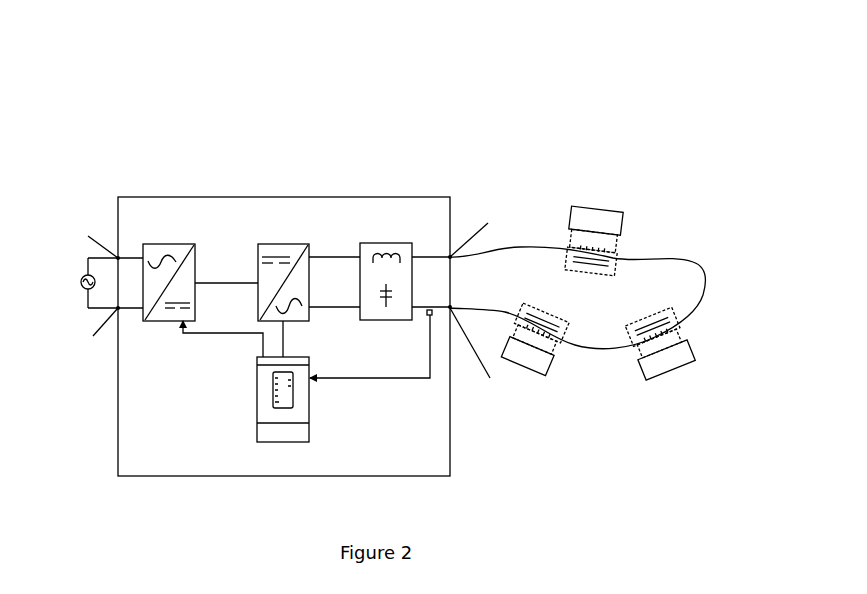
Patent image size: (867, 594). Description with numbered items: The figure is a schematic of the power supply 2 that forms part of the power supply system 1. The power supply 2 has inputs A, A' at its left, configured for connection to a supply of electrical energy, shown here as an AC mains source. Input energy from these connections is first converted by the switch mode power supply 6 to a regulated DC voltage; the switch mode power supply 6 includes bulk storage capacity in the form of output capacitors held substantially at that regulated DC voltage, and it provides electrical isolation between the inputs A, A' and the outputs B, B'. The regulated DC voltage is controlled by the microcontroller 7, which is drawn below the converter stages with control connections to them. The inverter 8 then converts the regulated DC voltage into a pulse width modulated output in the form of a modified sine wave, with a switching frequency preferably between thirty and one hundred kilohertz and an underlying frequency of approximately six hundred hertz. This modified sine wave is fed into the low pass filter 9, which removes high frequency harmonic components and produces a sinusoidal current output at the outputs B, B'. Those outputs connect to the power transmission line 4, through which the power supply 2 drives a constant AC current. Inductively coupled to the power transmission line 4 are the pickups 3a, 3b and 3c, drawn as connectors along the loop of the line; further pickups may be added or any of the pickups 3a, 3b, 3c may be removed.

The power supply system 1 is at (381, 99).
The power supply 2 is at (268, 190).
The pickup 3a is at (617, 242).
The pickup 3b is at (680, 330).
The pickup 3c is at (555, 345).
The power transmission line 4 is at (532, 235).
The switch mode power supply 6 is at (157, 252).
The microcontroller 7 is at (300, 433).
The inverter 8 is at (294, 256).
The low pass filter 9 is at (406, 257).